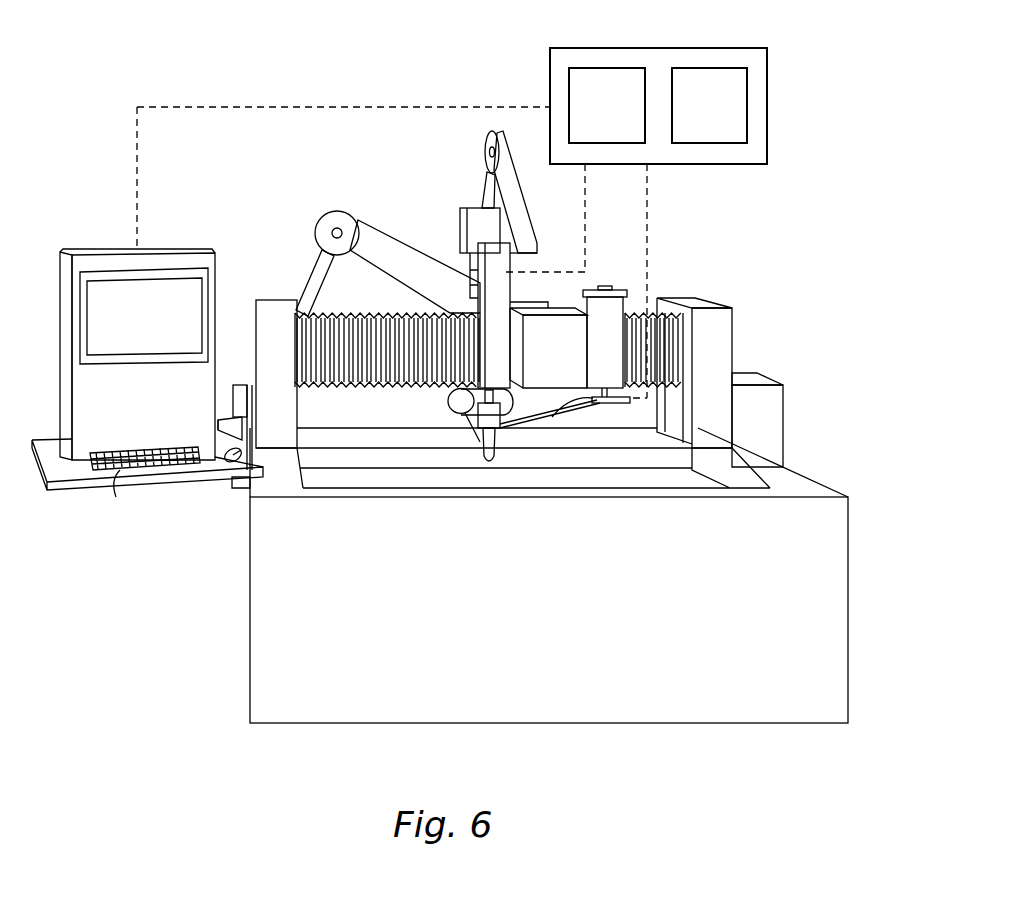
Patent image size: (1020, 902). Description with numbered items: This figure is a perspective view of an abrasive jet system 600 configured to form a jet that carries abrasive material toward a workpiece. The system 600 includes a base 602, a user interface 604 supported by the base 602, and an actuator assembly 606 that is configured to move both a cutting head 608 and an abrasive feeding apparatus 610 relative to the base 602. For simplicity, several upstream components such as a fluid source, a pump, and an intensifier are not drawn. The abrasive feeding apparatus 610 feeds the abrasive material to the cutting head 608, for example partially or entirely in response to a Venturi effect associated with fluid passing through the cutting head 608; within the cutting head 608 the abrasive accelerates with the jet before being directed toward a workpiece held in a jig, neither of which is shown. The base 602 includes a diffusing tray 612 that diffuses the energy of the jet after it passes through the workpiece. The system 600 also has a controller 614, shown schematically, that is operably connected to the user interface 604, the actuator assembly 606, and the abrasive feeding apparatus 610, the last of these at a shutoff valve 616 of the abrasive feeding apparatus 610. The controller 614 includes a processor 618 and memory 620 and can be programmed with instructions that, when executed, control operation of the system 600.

The abrasive jet system 600 is at (248, 55).
The base 602 is at (250, 620).
The user interface 604 is at (122, 488).
The actuator assembly 606 is at (482, 283).
The cutting head 608 is at (482, 428).
The abrasive feeding apparatus 610 is at (612, 280).
The diffusing tray 612 is at (688, 483).
The controller 614 is at (669, 88).
The shutoff valve 616 is at (555, 412).
The processor 618 is at (595, 68).
The memory 620 is at (708, 68).